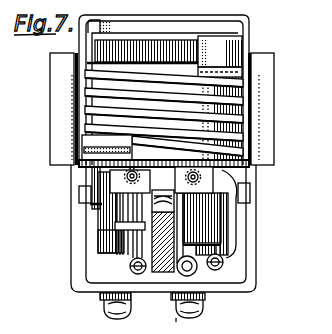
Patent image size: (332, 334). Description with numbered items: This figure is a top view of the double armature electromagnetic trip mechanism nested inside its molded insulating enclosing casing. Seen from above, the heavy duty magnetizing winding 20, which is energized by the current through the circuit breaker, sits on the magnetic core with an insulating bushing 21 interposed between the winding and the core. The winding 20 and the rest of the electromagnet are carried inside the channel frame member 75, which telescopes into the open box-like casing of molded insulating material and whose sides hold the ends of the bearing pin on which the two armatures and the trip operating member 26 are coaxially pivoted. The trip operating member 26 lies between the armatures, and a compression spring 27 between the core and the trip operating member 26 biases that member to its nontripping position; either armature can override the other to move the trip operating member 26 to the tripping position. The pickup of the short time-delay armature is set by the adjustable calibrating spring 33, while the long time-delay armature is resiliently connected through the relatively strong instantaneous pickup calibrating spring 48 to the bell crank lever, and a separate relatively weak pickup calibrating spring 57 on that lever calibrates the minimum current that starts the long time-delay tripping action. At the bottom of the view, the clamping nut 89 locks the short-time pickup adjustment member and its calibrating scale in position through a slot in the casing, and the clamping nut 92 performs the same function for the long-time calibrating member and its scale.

The magnetizing winding 20 is at (259, 95).
The insulating bushing 21 is at (203, 65).
The compression spring 27 is at (167, 165).
The trip operating member 26 is at (165, 270).
The calibrating spring 33 is at (130, 266).
The instantaneous pickup calibrating spring 48 is at (198, 273).
The pickup calibrating spring 57 is at (223, 264).
The clamping nut 89 is at (104, 308).
The clamping nut 92 is at (201, 313).
The channel frame member 75 is at (176, 326).